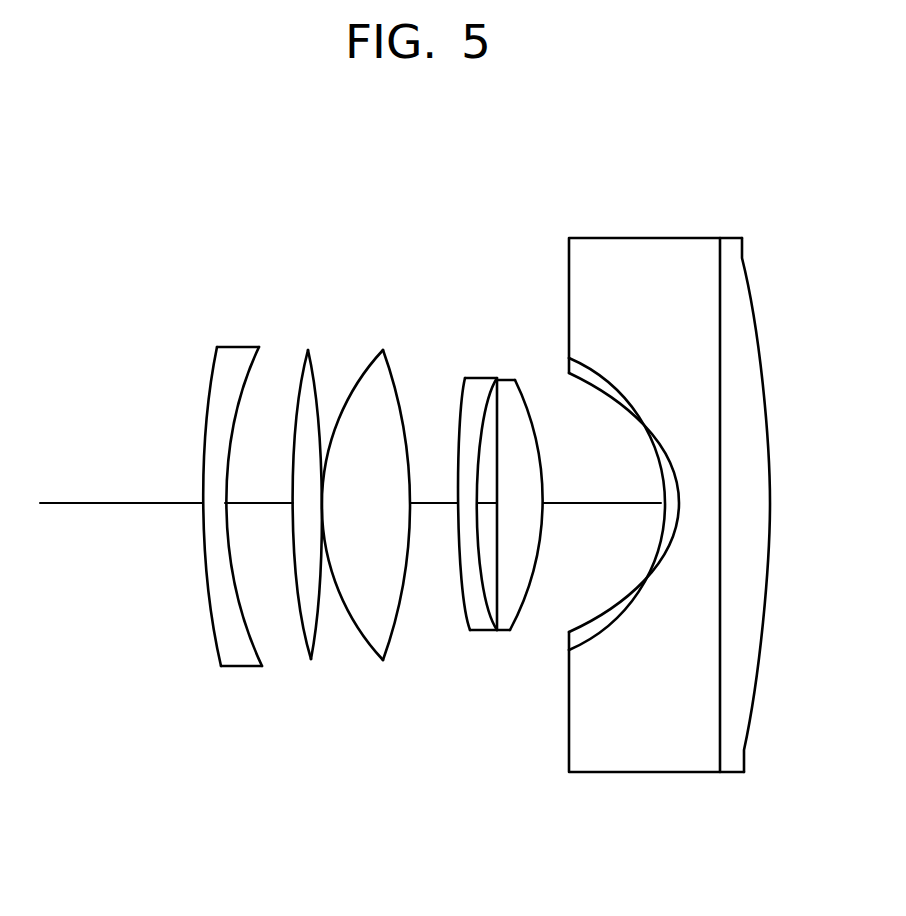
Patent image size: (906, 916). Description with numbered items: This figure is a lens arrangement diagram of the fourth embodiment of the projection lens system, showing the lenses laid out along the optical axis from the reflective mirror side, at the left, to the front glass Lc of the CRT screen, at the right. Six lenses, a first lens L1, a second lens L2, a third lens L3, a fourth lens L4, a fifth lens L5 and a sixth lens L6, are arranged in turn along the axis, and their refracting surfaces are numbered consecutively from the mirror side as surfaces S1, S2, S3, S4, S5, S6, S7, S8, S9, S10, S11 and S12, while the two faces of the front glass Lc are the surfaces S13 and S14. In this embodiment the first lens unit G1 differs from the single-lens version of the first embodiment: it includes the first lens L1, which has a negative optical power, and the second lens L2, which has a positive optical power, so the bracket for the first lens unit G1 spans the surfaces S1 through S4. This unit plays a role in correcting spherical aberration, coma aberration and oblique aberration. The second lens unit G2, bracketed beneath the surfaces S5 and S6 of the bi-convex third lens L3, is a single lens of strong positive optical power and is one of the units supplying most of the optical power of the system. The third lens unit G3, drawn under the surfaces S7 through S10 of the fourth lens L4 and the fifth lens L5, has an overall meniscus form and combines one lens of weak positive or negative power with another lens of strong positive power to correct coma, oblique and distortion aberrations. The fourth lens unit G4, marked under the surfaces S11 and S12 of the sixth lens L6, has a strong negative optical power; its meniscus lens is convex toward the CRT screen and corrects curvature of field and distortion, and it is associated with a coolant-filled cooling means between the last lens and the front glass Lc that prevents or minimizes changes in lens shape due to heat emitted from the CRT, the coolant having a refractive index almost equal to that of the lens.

The first lens L1 is at (238, 342).
The second lens L2 is at (307, 345).
The third lens L3 is at (380, 345).
The fourth lens L4 is at (481, 370).
The fifth lens L5 is at (510, 372).
The sixth lens L6 is at (560, 357).
The front glass Lc is at (727, 232).
The first lens surface S1 is at (225, 622).
The second lens surface S2 is at (260, 643).
The third lens surface S3 is at (302, 640).
The fourth lens surface S4 is at (316, 641).
The fifth lens surface S5 is at (363, 640).
The sixth lens surface S6 is at (398, 628).
The seventh lens surface S7 is at (468, 620).
The eighth lens surface S8 is at (492, 615).
The ninth lens surface S9 is at (502, 622).
The tenth lens surface S10 is at (525, 614).
The eleventh lens surface S11 is at (580, 625).
The twelfth lens surface S12 is at (597, 633).
The cover glass front surface S13 is at (718, 737).
The cover glass rear surface S14 is at (748, 738).
The first lens unit G1 is at (325, 827).
The second lens unit G2 is at (398, 827).
The third lens unit G3 is at (543, 827).
The fourth lens unit G4 is at (637, 827).